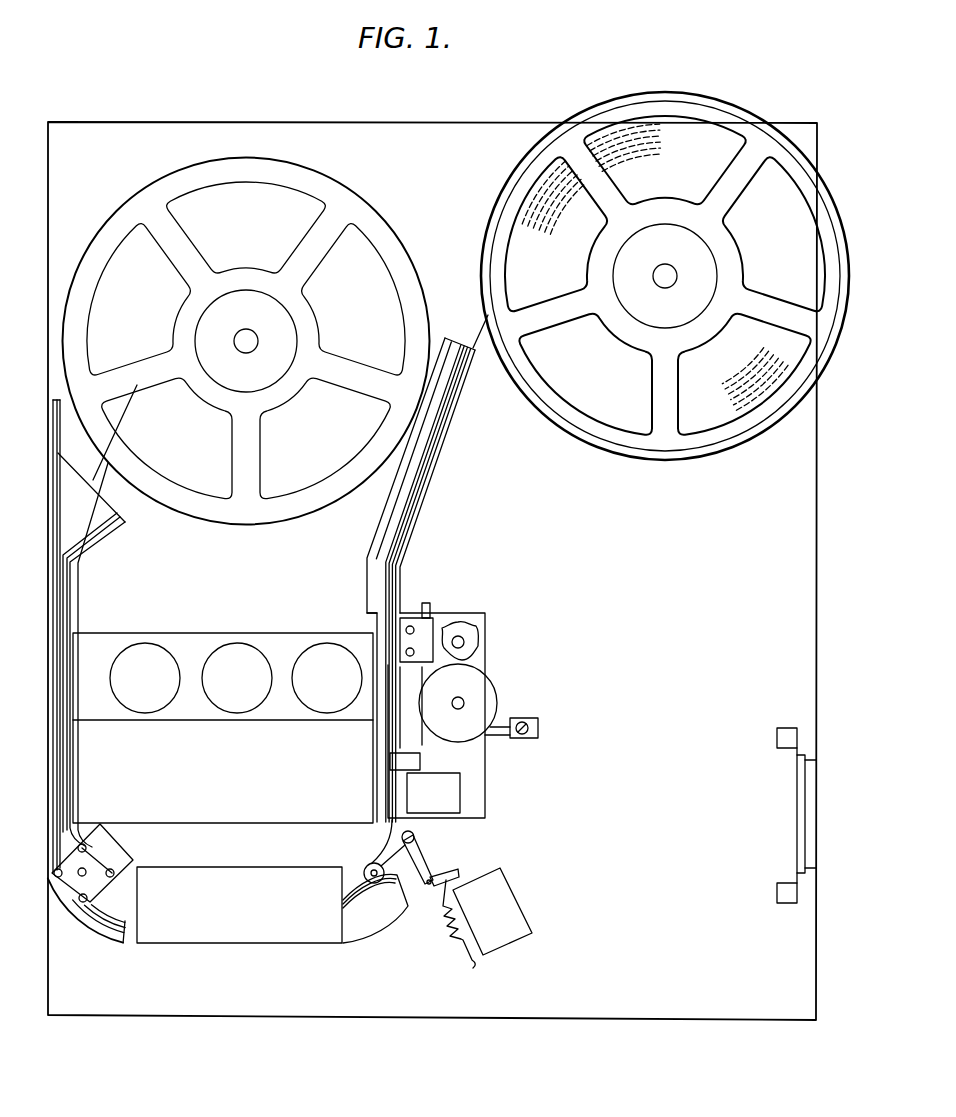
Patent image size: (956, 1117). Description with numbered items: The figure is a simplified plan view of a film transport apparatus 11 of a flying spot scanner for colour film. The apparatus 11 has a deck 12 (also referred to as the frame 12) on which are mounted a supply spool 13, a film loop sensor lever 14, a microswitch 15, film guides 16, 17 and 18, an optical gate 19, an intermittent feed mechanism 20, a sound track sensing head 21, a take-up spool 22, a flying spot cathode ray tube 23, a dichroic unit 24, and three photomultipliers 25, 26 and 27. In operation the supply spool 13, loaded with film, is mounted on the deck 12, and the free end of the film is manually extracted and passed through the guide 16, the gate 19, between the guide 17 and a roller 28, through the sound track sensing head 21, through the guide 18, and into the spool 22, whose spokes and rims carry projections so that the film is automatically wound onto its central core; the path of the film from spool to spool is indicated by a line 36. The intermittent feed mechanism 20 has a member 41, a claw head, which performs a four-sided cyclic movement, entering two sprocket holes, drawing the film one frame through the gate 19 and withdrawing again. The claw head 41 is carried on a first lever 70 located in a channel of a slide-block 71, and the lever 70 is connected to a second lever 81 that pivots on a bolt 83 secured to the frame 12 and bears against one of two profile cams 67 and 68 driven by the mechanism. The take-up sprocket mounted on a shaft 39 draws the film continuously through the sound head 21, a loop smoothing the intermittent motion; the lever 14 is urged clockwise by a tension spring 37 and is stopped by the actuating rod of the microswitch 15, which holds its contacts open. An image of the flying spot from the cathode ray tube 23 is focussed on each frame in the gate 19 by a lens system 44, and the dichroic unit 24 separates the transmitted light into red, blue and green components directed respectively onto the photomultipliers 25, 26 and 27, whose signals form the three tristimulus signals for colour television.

The film transport apparatus 11 is at (212, 110).
The deck 12 is at (328, 132).
The supply spool 13 is at (515, 172).
The film loop sensor lever 14 is at (440, 855).
The microswitch 15 is at (513, 893).
The film guide 16 is at (446, 446).
The film guide 17 is at (363, 922).
The film guide 18 is at (107, 543).
The optical gate 19 is at (375, 620).
The intermittent feed mechanism 20 is at (506, 650).
The sound track sensing head 21 is at (245, 923).
The take-up spool 22 is at (351, 208).
The flying spot cathode ray tube 23 is at (815, 800).
The dichroic unit 24 is at (183, 793).
The photomultiplier 25 is at (142, 654).
The photomultiplier 26 is at (236, 654).
The photomultiplier 27 is at (327, 654).
The roller 28 is at (366, 865).
The line indicating film path 36 is at (527, 247).
The tension spring 37 is at (450, 927).
The shaft 39 is at (80, 877).
The member (claw head) 41 is at (410, 763).
The lens system 44 is at (448, 813).
The profile cam 67 is at (476, 688).
The profile cam 68 is at (470, 640).
The first lever 70 is at (432, 607).
The slide-block 71 is at (417, 622).
The second lever 81 is at (498, 738).
The bolt 83 is at (525, 727).